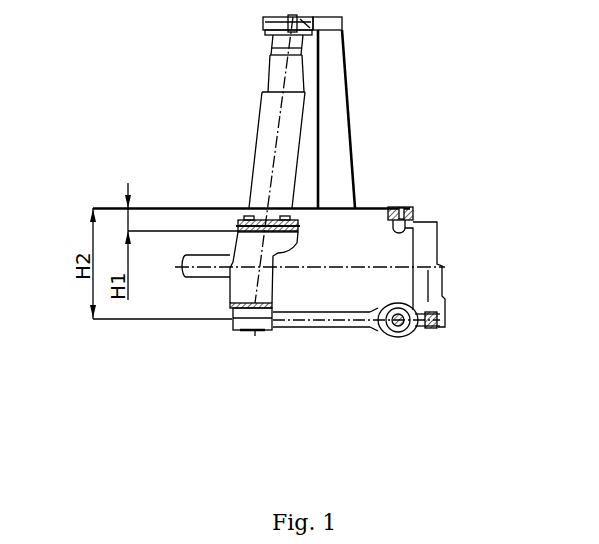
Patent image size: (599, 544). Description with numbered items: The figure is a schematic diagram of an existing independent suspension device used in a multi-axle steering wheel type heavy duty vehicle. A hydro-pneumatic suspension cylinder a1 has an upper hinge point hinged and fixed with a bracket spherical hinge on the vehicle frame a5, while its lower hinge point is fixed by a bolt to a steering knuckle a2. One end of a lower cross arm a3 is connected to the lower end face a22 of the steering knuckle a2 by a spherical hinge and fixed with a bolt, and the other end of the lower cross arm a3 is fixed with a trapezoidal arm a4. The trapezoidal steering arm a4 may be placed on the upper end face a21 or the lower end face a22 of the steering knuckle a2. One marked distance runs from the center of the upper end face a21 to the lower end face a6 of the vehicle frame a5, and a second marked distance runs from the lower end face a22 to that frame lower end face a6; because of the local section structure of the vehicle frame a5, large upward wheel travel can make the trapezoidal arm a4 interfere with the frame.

The hydro-pneumatic suspension cylinder a1 is at (226, 159).
The steering knuckle a2 is at (221, 273).
The upper end face of the steering knuckle a21 is at (177, 183).
The lower end face of the steering knuckle a22 is at (151, 330).
The lower cross arm a3 is at (316, 330).
The trapezoidal arm a4 is at (421, 322).
The vehicle frame a5 is at (337, 137).
The lower end face of the vehicle frame a6 is at (464, 197).